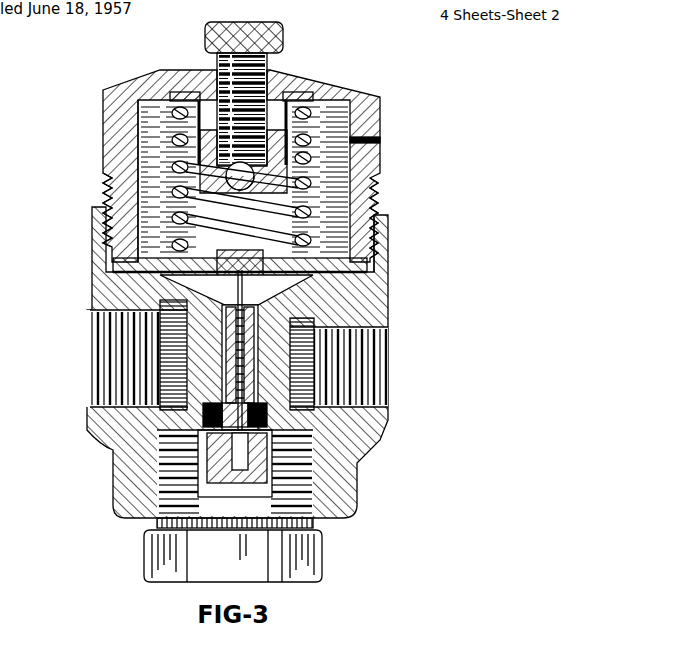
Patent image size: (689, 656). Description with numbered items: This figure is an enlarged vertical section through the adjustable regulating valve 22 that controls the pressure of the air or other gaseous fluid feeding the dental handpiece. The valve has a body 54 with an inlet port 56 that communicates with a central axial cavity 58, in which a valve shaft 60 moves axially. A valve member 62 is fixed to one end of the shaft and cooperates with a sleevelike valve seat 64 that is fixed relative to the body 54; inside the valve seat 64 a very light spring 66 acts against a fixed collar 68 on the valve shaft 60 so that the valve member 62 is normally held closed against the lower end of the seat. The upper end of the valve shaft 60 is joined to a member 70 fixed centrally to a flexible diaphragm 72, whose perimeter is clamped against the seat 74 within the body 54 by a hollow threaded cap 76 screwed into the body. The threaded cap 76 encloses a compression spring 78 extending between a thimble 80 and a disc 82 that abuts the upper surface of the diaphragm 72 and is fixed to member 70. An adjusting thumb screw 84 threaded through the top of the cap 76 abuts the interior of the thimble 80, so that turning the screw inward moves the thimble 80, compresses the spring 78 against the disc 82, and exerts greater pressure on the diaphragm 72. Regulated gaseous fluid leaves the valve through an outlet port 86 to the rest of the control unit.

The regulating valve 22 is at (236, 294).
The body 54 is at (355, 278).
The inlet port 56 is at (392, 357).
The central axial cavity 58 is at (330, 468).
The valve shaft 60 is at (113, 454).
The valve member 62 is at (372, 424).
The sleevelike valve seat 64 is at (350, 310).
The spring 66 is at (370, 247).
The fixed collar 68 is at (372, 200).
The member 70 is at (374, 176).
The flexible diaphragm 72 is at (112, 185).
The seat 74 is at (115, 290).
The hollow threaded cap 76 is at (108, 90).
The compression spring 78 is at (322, 104).
The thimble 80 is at (298, 100).
The disc 82 is at (118, 143).
The adjusting thumb screw 84 is at (213, 22).
The outlet port 86 is at (95, 372).